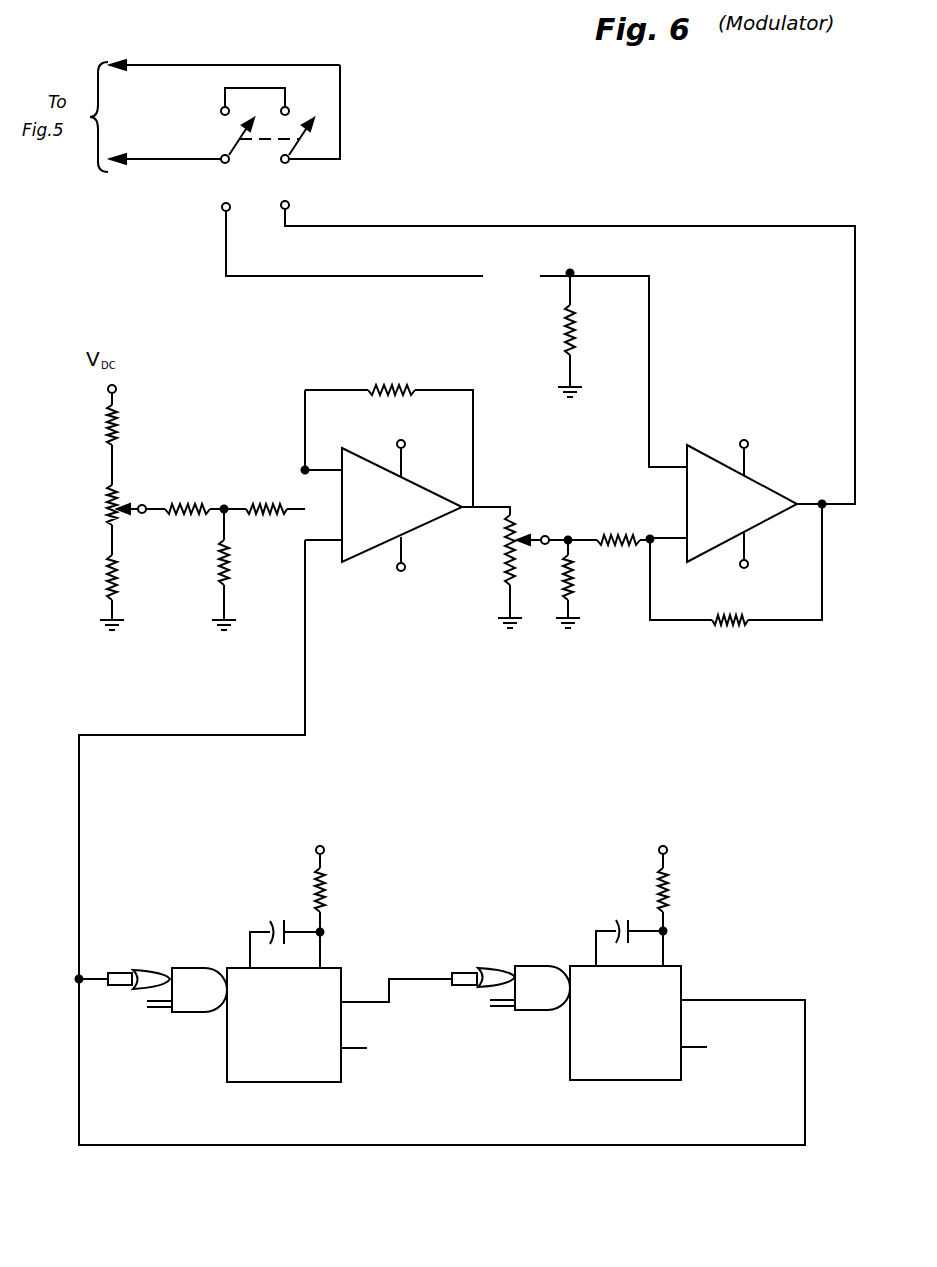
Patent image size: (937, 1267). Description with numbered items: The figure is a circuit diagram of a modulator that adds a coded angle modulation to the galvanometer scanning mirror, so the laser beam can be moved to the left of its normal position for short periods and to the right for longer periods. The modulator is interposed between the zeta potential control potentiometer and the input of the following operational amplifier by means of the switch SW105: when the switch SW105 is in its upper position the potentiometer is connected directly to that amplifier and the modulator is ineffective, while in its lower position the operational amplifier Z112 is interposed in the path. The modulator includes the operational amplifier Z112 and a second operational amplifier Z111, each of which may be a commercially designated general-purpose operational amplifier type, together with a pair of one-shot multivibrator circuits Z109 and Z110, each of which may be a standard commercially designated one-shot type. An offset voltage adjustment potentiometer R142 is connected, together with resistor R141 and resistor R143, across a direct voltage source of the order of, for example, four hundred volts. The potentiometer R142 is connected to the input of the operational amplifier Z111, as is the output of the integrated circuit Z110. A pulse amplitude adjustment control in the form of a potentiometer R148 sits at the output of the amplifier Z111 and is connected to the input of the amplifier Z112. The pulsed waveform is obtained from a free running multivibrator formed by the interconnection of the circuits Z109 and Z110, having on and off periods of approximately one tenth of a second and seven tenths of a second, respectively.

The switch SW105 is at (252, 171).
The resistor R141 is at (113, 425).
The offset voltage adjustment potentiometer R142 is at (118, 522).
The resistor R143 is at (114, 582).
The pulse amplitude adjustment control potentiometer R148 is at (516, 535).
The second operational amplifier Z111 is at (462, 452).
The operational amplifier Z112 is at (758, 502).
The one-shot multivibrator circuit Z109 is at (320, 990).
The one-shot multivibrator circuit Z110 is at (655, 990).